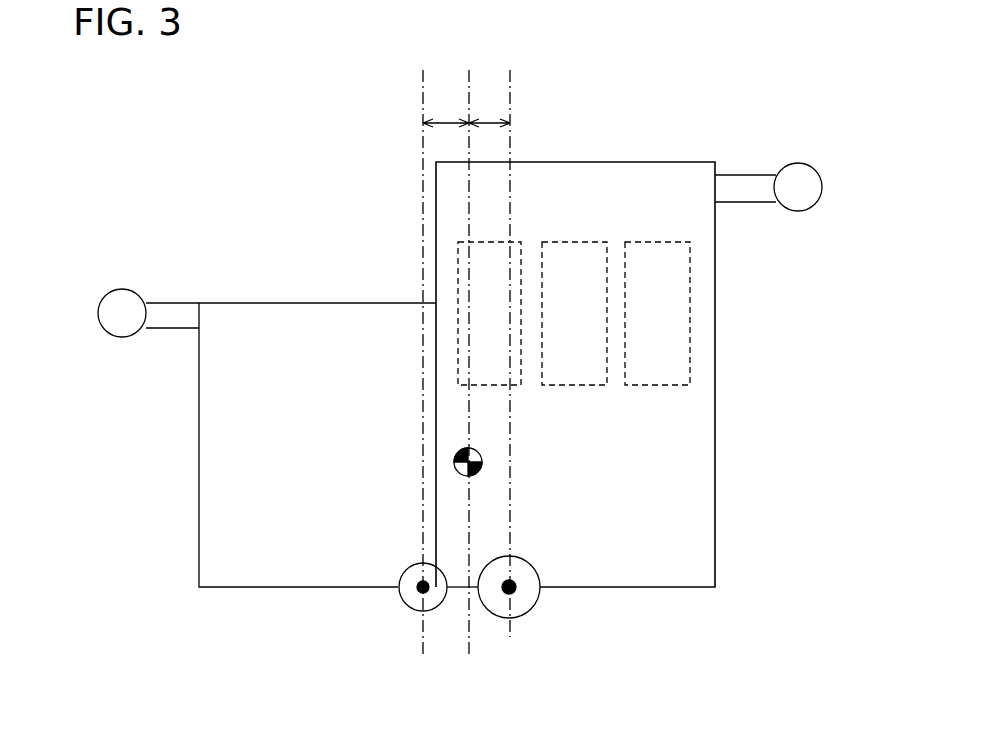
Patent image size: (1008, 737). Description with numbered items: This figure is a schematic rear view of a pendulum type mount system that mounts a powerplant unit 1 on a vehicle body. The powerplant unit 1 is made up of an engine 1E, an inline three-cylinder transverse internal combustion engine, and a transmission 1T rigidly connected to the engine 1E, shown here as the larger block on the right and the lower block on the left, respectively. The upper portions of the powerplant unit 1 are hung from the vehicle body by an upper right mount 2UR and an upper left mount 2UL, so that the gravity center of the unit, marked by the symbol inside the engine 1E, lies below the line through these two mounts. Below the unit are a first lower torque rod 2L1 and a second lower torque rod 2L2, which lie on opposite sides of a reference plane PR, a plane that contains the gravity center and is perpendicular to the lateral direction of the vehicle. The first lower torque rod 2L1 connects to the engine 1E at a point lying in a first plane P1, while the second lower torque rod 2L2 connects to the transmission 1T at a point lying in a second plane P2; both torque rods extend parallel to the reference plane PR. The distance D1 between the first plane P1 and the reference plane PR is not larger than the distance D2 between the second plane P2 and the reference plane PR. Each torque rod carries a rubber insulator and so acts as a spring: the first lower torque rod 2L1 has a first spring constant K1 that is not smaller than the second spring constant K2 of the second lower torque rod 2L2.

The powerplant unit 1 is at (385, 213).
The transmission 1T is at (283, 333).
The engine 1E is at (450, 207).
The upper left mount 2UL is at (122, 332).
The upper right mount 2UR is at (797, 204).
The first lower torque rod 2L1 is at (540, 597).
The second lower torque rod 2L2 is at (398, 597).
The first spring constant K1 is at (522, 580).
The second spring constant K2 is at (413, 576).
The first plane P1 is at (510, 108).
The second plane P2 is at (420, 102).
The reference plane PR is at (468, 628).
The distance D1 is at (489, 106).
The distance D2 is at (446, 106).